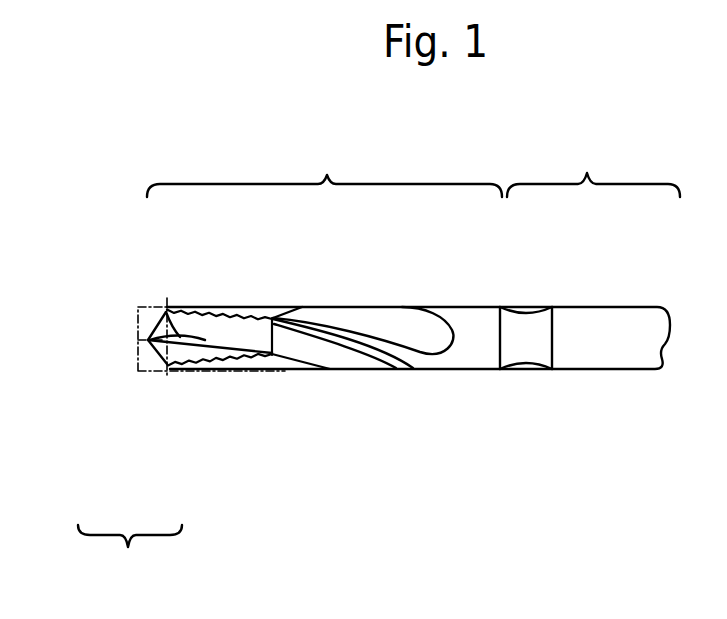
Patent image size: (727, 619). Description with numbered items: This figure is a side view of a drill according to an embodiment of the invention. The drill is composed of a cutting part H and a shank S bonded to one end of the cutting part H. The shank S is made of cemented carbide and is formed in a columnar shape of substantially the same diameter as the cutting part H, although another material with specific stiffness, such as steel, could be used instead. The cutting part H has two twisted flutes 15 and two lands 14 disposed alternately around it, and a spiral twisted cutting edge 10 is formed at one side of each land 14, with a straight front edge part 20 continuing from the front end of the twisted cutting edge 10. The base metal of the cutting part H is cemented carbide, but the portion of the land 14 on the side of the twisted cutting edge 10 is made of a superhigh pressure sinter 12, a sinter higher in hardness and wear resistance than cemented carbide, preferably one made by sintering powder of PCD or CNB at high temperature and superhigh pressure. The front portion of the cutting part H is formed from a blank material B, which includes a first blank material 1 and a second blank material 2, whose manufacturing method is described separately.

The first blank material 1 is at (252, 375).
The second blank material 2 is at (150, 364).
The twisted cutting edge 10 is at (183, 337).
The superhigh pressure sinter 12 is at (203, 369).
The land 14 is at (247, 333).
The twisted flute 15 is at (355, 328).
The straight front edge part 20 is at (152, 309).
The cutting part H is at (324, 164).
The shank S is at (593, 162).
The blank material B is at (130, 559).